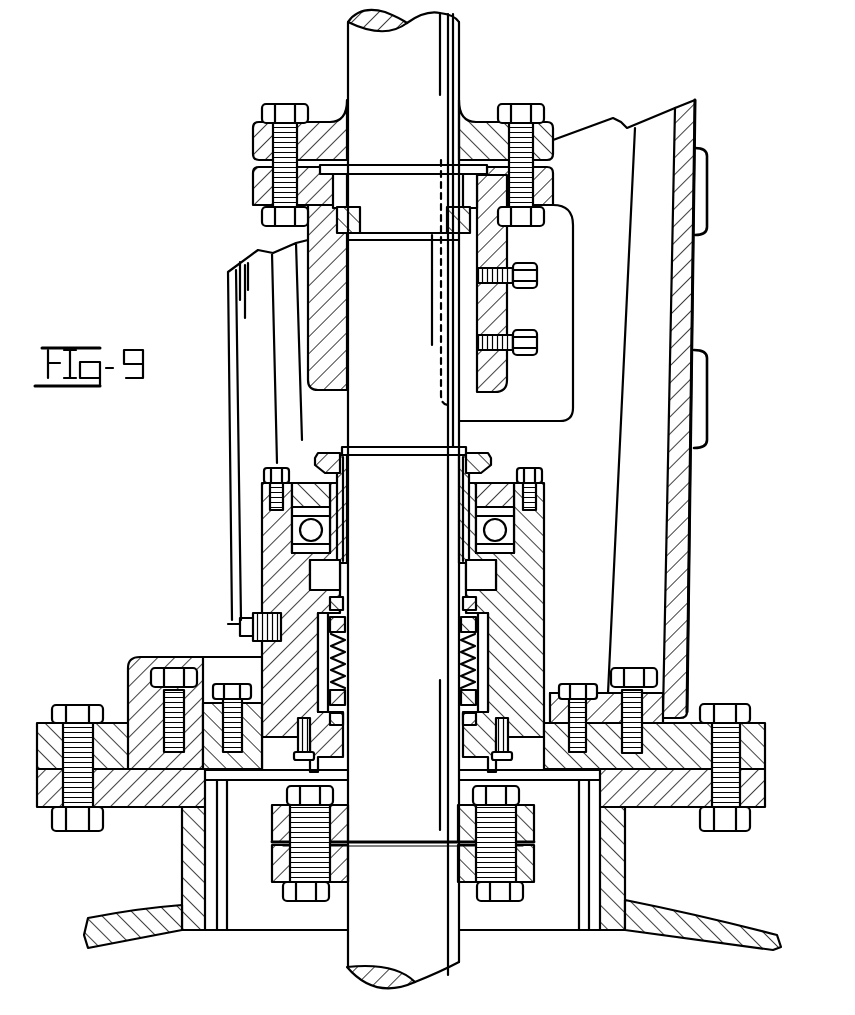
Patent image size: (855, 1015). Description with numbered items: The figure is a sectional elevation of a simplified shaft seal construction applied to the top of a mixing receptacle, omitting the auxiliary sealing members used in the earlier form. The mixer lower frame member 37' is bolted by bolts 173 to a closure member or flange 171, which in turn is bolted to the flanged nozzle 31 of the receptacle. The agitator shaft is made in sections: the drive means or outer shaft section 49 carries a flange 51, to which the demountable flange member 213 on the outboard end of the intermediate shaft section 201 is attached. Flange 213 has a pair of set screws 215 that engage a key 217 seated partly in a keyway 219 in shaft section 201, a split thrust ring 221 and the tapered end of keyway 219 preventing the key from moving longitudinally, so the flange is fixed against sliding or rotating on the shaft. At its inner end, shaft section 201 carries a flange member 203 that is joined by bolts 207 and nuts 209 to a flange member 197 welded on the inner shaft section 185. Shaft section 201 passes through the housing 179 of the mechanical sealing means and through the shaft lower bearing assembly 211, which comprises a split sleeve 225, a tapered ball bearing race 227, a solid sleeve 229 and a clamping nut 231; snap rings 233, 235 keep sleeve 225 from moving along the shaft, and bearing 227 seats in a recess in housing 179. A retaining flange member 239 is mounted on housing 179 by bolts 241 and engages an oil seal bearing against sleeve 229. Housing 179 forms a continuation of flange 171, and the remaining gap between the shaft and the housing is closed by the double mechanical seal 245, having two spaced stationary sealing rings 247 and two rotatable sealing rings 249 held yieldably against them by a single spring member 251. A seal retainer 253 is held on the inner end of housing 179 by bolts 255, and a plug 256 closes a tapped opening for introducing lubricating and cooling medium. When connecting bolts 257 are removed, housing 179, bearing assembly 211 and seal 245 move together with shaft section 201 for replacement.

The flanged nozzle 31 is at (672, 808).
The lower frame member 37' is at (647, 409).
The outer shaft section 49 is at (460, 74).
The flange 51 is at (490, 125).
The closure member or flange 171 is at (765, 723).
The bolts 173 is at (148, 672).
The housing 179 is at (542, 578).
The inner shaft section 185 is at (347, 970).
The flange member 197 is at (525, 860).
The intermediate shaft section 201 is at (358, 403).
The flange member 203 is at (525, 824).
The bolts 207 is at (287, 798).
The nuts 209 is at (305, 900).
The shaft lower bearing assembly 211 is at (520, 466).
The demountable flange member 213 is at (315, 263).
The set screws 215 is at (522, 332).
The key 217 is at (462, 300).
The keyway 219 is at (451, 403).
The split thrust ring 221 is at (358, 235).
The split sleeve 225 is at (346, 520).
The tapered ball bearing race 227 is at (503, 530).
The solid sleeve 229 is at (346, 481).
The clamping nut 231 is at (504, 465).
The snap ring 233 is at (365, 566).
The snap ring 235 is at (352, 449).
The retaining flange member 239 is at (548, 498).
The bolts 241 is at (262, 476).
The mechanical seal 245 is at (304, 663).
The stationary sealing rings 247 is at (468, 606).
The rotatable sealing rings 249 is at (344, 626).
The spring member 251 is at (345, 658).
The seal retainer 253 is at (318, 752).
The bolts 255 is at (312, 760).
The plug 256 is at (243, 618).
The connecting bolts 257 is at (237, 690).